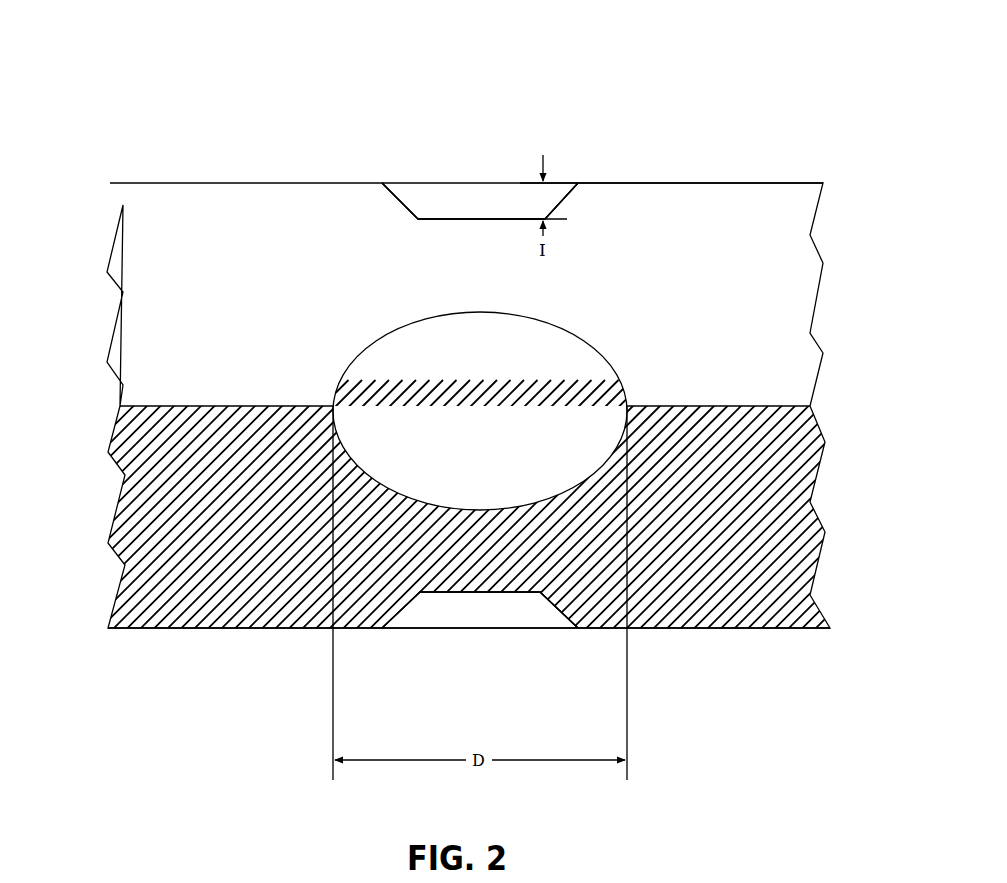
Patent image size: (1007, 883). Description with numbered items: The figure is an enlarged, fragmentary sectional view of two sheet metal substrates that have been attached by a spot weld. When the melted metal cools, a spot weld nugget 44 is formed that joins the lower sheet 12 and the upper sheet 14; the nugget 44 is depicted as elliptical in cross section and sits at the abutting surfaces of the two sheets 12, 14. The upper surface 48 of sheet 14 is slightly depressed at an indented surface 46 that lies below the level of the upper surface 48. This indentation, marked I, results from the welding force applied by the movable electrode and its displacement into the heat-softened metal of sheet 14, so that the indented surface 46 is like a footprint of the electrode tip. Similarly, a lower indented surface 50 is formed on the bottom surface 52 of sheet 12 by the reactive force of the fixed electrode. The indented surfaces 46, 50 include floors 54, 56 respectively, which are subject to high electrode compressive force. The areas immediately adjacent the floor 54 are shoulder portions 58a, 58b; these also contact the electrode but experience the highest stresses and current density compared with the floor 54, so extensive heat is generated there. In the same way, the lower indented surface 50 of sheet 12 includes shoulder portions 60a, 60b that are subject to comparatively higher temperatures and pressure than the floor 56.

The sheet 12 is at (143, 573).
The sheet 14 is at (180, 240).
The spot weld nugget 44 is at (480, 408).
The indented surface 46 is at (509, 188).
The upper surface 48 is at (698, 182).
The lower indented surface 50 is at (507, 605).
The bottom surface 52 is at (230, 633).
The floor 54 is at (495, 223).
The floor 56 is at (477, 593).
The shoulder portion 58a is at (401, 200).
The shoulder portion 58b is at (559, 183).
The shoulder portion 60a is at (400, 613).
The shoulder portion 60b is at (557, 613).